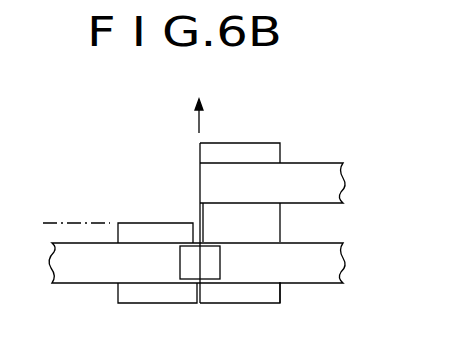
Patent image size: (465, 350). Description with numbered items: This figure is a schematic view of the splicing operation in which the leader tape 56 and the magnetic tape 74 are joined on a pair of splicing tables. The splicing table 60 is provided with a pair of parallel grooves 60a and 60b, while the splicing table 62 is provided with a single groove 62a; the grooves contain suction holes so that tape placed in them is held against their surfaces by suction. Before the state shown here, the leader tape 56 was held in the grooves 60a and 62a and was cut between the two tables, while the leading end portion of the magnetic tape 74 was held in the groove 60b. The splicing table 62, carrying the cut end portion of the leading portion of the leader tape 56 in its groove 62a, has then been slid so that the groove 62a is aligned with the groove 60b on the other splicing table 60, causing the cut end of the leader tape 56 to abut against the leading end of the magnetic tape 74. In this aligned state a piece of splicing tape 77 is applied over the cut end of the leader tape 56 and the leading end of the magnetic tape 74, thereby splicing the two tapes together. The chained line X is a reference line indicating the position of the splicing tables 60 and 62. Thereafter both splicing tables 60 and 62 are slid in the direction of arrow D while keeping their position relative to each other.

The leader tape 56 is at (335, 163).
The splicing table 60 is at (272, 143).
The groove 60a is at (280, 207).
The groove 60b is at (280, 287).
The splicing table 62 is at (133, 222).
The groove 62a is at (117, 285).
The magnetic tape 74 is at (340, 285).
The splicing tape 77 is at (180, 263).
The arrow D is at (200, 124).
The chained line X is at (60, 222).